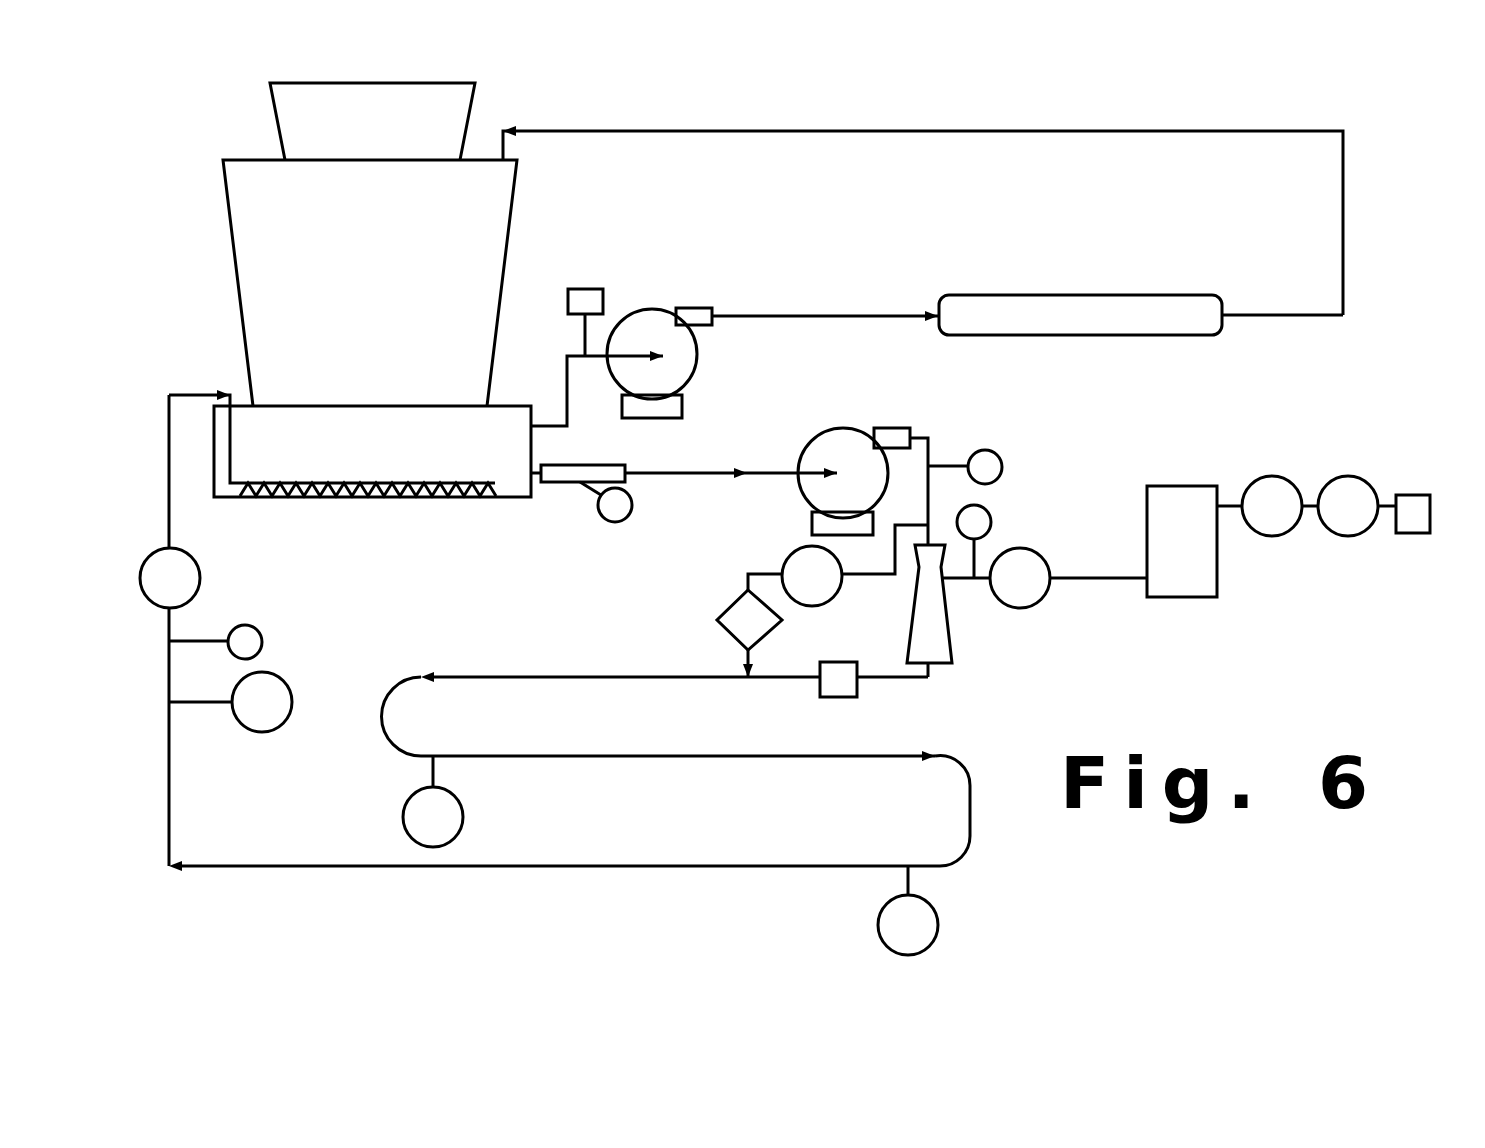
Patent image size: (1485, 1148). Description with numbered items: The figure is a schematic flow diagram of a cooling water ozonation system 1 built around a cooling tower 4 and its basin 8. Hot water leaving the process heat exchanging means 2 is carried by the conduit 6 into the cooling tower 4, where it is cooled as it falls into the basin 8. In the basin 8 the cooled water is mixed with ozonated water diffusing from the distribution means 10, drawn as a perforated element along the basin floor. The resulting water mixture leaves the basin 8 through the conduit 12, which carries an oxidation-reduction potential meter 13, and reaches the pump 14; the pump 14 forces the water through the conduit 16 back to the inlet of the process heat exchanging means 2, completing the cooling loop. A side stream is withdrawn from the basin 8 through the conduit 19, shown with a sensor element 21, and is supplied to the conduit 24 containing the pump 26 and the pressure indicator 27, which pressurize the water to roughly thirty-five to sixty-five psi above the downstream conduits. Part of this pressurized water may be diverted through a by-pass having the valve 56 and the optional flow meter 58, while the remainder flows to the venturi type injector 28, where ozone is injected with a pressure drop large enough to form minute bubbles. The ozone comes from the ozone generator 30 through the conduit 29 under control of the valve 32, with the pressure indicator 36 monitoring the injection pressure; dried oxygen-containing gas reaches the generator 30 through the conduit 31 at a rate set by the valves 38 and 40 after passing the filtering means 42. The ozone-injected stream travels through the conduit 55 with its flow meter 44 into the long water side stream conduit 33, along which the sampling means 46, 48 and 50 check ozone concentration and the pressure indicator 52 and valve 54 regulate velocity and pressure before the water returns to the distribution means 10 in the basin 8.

The cooling water ozonation system 1 is at (942, 116).
The process heat exchanging means 2 is at (1103, 317).
The cooling tower 4 is at (343, 280).
The conduit 6 is at (810, 132).
The basin 8 is at (345, 456).
The distribution means 10 is at (360, 498).
The conduit 12 is at (565, 407).
The oxidation-reduction potential meter 13 is at (582, 292).
The pump 14 is at (683, 358).
The conduit 16 is at (812, 313).
The conduit 19 is at (648, 470).
The sensor 21 is at (620, 503).
The conduit 24 is at (778, 473).
The pump 26 is at (855, 452).
The pressure indicator 27 is at (987, 450).
The venturi type injector 28 is at (923, 617).
The conduit 29 is at (1100, 578).
The ozone generator 30 is at (1182, 541).
The conduit 31 is at (1234, 500).
The valve 32 is at (998, 603).
The conduit 33 is at (583, 680).
The pressure indicator 36 is at (982, 532).
The valve 38 is at (1260, 528).
The valve 40 is at (1328, 523).
The filtering means 42 is at (1412, 495).
The flow meter 44 is at (835, 678).
The sampling means 46 is at (452, 810).
The sampling means 48 is at (913, 922).
The sampling means 50 is at (255, 717).
The pressure indicator 52 is at (237, 635).
The valve 54 is at (190, 545).
The conduit 55 is at (875, 680).
The valve 56 is at (784, 562).
The flow meter 58 is at (732, 610).